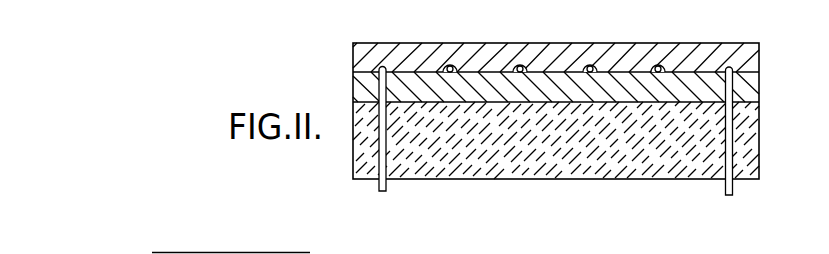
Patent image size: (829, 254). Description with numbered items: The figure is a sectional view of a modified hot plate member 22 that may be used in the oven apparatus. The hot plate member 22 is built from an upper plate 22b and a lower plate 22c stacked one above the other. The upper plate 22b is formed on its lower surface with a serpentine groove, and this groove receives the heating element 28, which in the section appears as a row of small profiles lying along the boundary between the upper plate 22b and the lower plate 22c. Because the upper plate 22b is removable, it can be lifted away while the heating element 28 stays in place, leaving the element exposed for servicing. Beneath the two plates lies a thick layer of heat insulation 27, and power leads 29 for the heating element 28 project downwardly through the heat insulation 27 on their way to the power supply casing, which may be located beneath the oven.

The hot plate member 22 is at (345, 64).
The upper plate 22b is at (689, 58).
The lower plate 22c is at (632, 92).
The heat insulation 27 is at (567, 180).
The heating element 28 is at (453, 65).
The power leads 29 is at (379, 190).